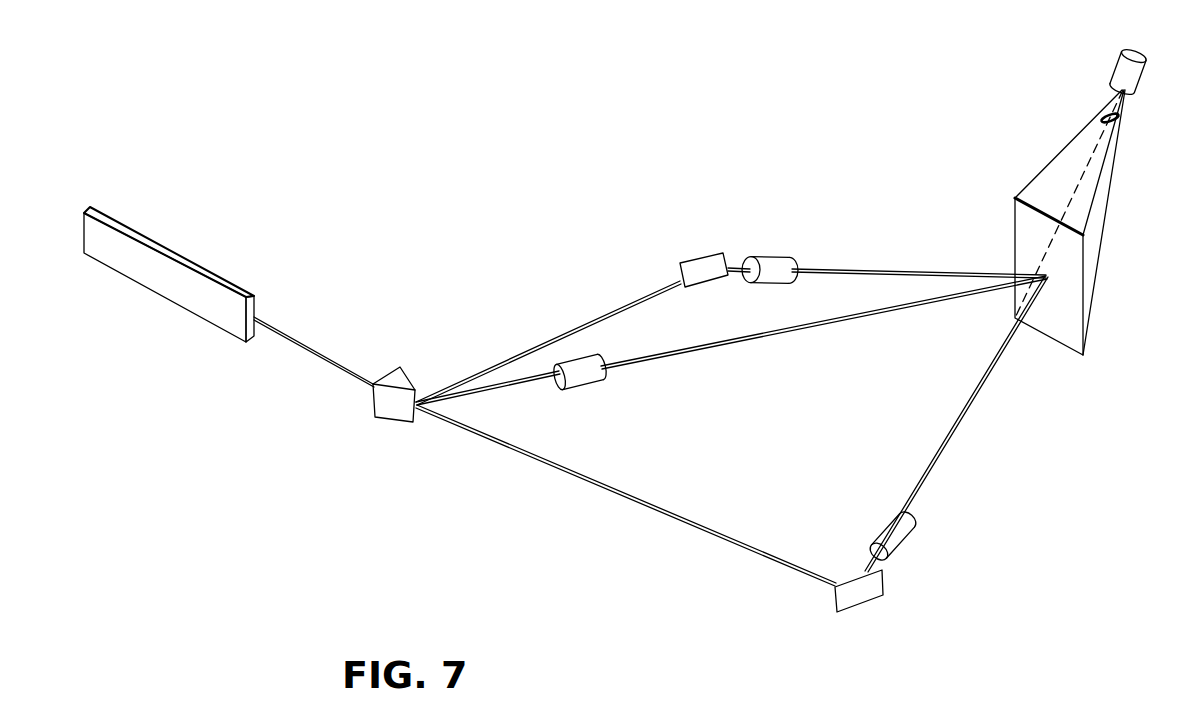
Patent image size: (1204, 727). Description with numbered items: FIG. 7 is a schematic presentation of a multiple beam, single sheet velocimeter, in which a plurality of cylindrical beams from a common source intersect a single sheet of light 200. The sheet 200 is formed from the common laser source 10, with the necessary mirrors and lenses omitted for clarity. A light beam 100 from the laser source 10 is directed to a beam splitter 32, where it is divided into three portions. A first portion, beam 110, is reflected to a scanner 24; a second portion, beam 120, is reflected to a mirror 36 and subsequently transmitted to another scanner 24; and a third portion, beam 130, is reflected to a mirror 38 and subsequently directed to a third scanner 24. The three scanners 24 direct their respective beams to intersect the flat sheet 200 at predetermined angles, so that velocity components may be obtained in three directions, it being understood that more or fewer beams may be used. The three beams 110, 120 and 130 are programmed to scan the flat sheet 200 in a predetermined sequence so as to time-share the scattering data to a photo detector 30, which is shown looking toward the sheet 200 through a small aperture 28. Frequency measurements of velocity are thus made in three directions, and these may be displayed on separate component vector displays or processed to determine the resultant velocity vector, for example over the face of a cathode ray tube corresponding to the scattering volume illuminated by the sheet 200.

The laser source 10 is at (161, 246).
The light beam 100 is at (303, 343).
The beam splitter 32 is at (408, 377).
The beam 120 is at (535, 349).
The beam 110 is at (523, 389).
The beam 130 is at (640, 503).
The scanner 24 is at (598, 386).
The mirror 36 is at (695, 256).
The sheet of light 200 is at (1083, 257).
The photo detector 30 is at (1142, 73).
The aperture 28 is at (1122, 118).
The mirror 38 is at (833, 607).